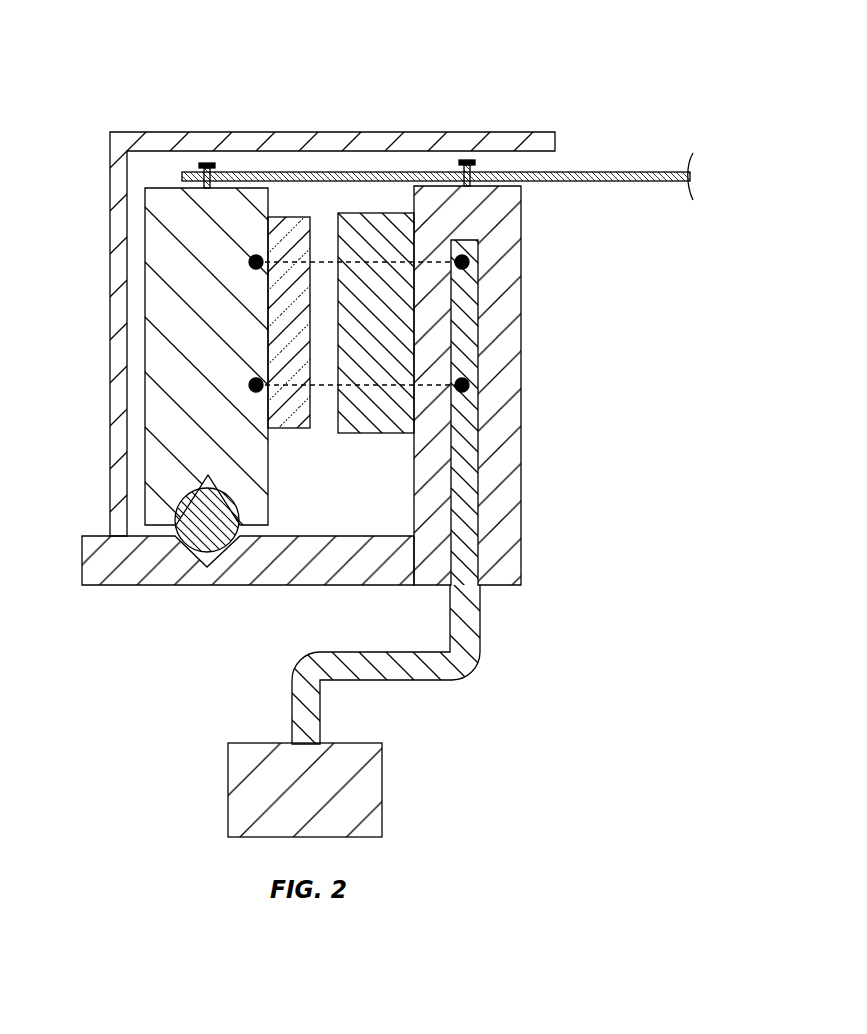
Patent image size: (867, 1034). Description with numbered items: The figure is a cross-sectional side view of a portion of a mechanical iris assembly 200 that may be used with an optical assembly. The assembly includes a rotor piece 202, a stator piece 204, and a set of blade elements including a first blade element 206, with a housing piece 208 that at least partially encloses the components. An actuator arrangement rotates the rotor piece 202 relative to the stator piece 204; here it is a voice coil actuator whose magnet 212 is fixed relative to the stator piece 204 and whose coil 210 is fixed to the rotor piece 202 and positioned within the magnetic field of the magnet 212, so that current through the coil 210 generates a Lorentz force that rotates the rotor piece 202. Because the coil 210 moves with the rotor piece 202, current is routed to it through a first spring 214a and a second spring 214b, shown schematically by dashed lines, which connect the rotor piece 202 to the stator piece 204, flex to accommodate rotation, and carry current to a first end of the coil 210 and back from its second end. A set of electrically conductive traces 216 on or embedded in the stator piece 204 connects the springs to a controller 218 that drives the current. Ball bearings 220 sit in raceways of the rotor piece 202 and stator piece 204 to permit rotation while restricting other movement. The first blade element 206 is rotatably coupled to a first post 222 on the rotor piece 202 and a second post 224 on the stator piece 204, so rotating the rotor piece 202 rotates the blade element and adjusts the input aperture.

The mechanical iris assembly 200 is at (92, 58).
The rotor piece 202 is at (145, 296).
The stator piece 204 is at (521, 226).
The first blade element 206 is at (617, 156).
The housing piece 208 is at (110, 178).
The coil 210 is at (288, 217).
The magnet 212 is at (355, 213).
The first spring 214a is at (400, 262).
The second spring 214b is at (376, 400).
The set of electrically conductive traces 216 is at (481, 612).
The controller 218 is at (383, 792).
The ball bearings 220 is at (196, 548).
The first post 222 is at (207, 163).
The second post 224 is at (467, 160).